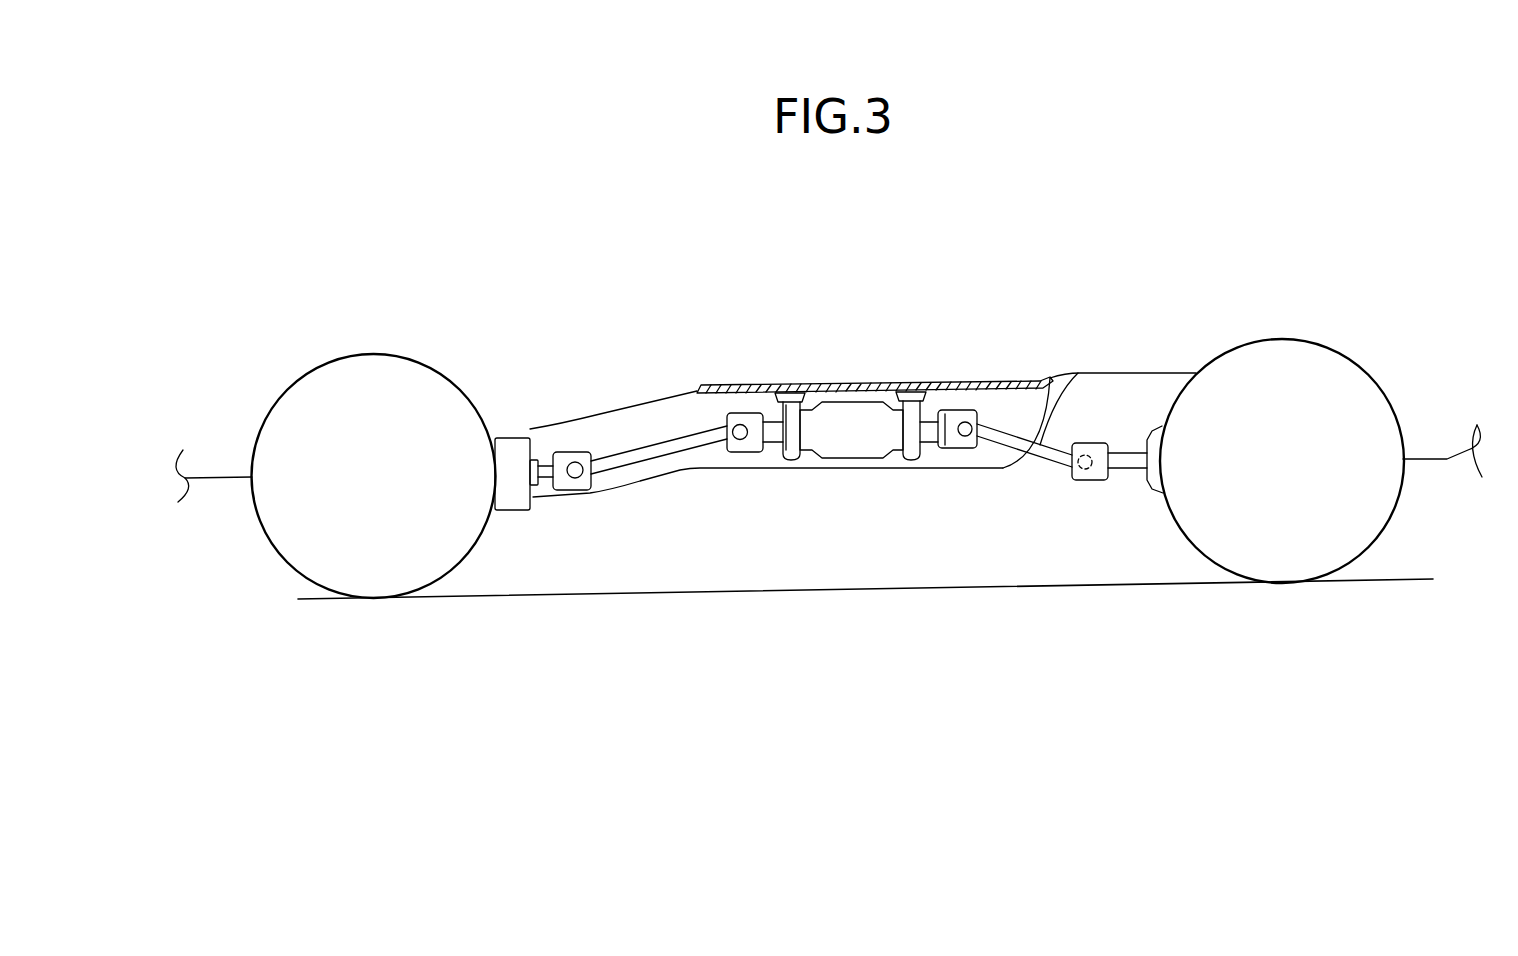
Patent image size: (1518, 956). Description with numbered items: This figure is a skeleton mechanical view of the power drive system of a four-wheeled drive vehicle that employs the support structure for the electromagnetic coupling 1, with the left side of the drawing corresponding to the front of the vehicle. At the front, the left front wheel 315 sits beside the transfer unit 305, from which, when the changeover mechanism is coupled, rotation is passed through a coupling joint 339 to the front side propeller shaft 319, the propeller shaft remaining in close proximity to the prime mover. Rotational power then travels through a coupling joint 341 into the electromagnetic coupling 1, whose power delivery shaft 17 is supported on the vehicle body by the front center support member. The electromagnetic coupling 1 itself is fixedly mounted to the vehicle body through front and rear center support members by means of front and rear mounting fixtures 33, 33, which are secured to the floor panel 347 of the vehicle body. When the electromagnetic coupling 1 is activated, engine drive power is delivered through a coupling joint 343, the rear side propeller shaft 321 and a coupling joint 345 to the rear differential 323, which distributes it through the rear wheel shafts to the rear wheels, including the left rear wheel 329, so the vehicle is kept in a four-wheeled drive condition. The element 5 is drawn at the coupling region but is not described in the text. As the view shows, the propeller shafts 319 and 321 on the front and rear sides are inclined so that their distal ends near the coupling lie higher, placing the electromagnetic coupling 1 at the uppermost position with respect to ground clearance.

The electromagnetic coupling 1 is at (862, 461).
The link bracket 5 is at (950, 430).
The power delivery shaft 17 is at (788, 437).
The mounting fixture 33 is at (800, 391).
The transfer unit 305 is at (523, 446).
The left front wheel 315 is at (381, 400).
The front side propeller shaft 319 is at (648, 457).
The rear side propeller shaft 321 is at (1032, 428).
The rear differential 323 is at (1160, 428).
The left rear wheel 329 is at (1283, 387).
The coupling joint 339 is at (580, 492).
The coupling joint 341 is at (750, 454).
The coupling joint 343 is at (985, 457).
The coupling joint 345 is at (1097, 483).
The floor panel 347 is at (978, 382).